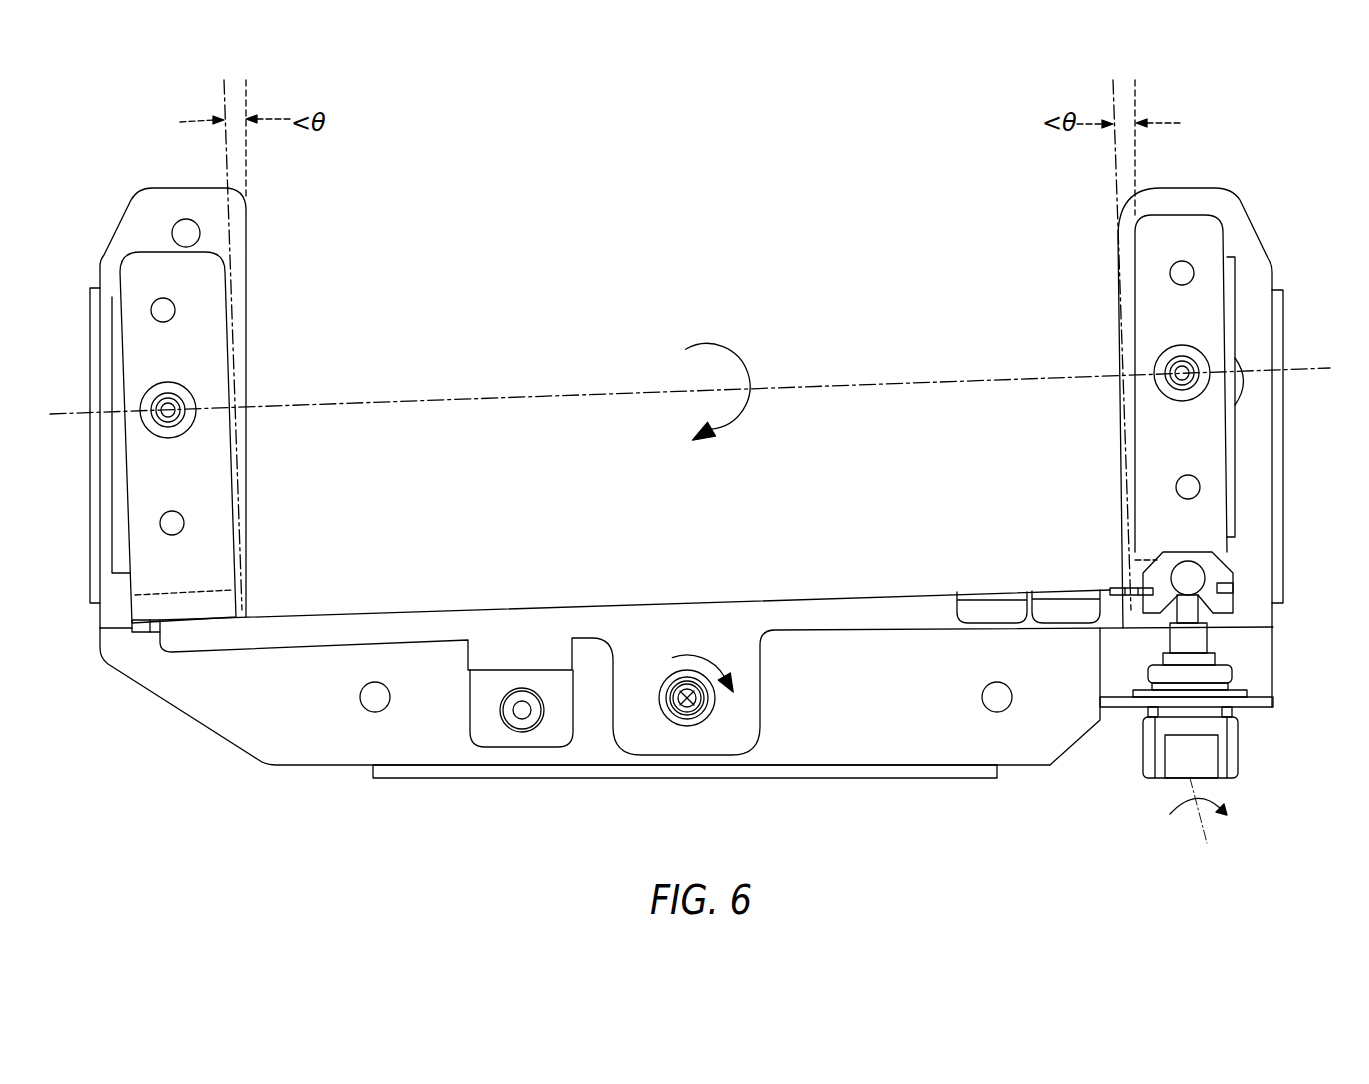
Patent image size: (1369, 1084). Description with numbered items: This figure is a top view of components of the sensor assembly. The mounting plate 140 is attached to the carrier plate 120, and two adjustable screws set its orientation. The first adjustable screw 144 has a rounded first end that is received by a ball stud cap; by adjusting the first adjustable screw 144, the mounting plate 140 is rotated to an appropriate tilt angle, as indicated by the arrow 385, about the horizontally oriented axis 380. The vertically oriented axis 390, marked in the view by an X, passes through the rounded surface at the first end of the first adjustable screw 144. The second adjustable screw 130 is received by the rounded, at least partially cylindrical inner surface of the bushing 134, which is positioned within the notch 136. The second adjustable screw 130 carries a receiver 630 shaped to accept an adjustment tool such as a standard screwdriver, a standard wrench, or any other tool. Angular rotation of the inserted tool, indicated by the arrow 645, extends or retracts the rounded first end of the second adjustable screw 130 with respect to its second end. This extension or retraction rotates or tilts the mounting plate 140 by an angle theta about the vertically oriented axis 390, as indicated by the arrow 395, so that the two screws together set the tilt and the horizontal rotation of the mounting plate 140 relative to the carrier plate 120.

The carrier plate 120 is at (894, 705).
The second adjustable screw 130 is at (1221, 711).
The bushing 134 is at (1157, 573).
The notch 136 is at (1235, 588).
The mounting plate 140 is at (664, 641).
The first adjustable screw 144 is at (690, 727).
The horizontally oriented axis 380 is at (633, 393).
The arrow 385 is at (723, 367).
The vertically oriented axis 390 is at (672, 713).
The arrow 395 is at (702, 642).
The receiver 630 is at (1213, 783).
The arrow 645 is at (1190, 808).